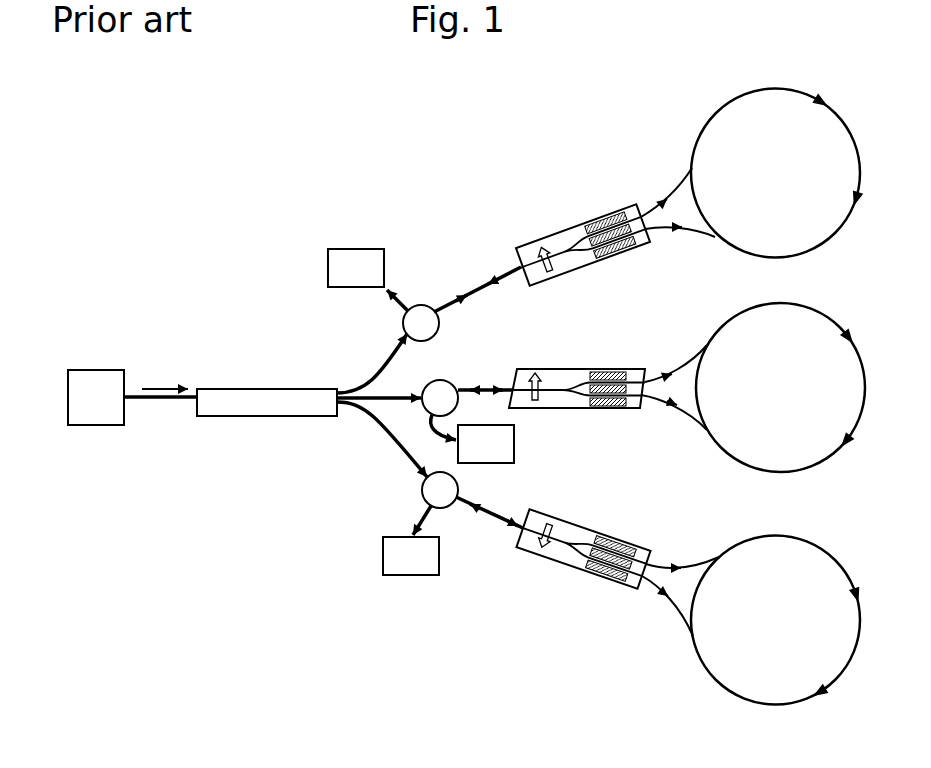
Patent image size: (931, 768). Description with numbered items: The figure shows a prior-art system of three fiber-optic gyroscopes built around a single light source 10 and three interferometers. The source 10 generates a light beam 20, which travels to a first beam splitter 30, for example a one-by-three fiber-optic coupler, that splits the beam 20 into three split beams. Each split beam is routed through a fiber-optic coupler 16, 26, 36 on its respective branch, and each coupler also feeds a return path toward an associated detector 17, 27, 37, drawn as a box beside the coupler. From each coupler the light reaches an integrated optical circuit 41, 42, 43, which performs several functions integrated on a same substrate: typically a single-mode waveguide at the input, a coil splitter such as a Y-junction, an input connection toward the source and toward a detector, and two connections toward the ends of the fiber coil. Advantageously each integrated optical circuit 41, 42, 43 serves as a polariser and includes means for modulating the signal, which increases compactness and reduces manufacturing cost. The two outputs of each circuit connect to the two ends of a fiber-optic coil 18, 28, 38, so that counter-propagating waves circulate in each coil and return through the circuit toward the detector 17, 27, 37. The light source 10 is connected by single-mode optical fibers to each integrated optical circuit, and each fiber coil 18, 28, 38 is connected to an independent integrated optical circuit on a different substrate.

The light source 10 is at (68, 390).
The light beam 20 is at (165, 369).
The first beam splitter 30 is at (217, 417).
The detector 17 is at (328, 278).
The coupler 16 is at (404, 325).
The coupler 26 is at (432, 380).
The detector 27 is at (514, 451).
The coupler 36 is at (420, 490).
The detector 37 is at (385, 563).
The integrated optical circuit 41 is at (578, 231).
The integrated optical circuit 42 is at (588, 368).
The integrated optical circuit 43 is at (596, 533).
The fiber-optic coil 18 is at (707, 123).
The fiber-optic coil 28 is at (793, 303).
The fiber-optic coil 38 is at (697, 662).